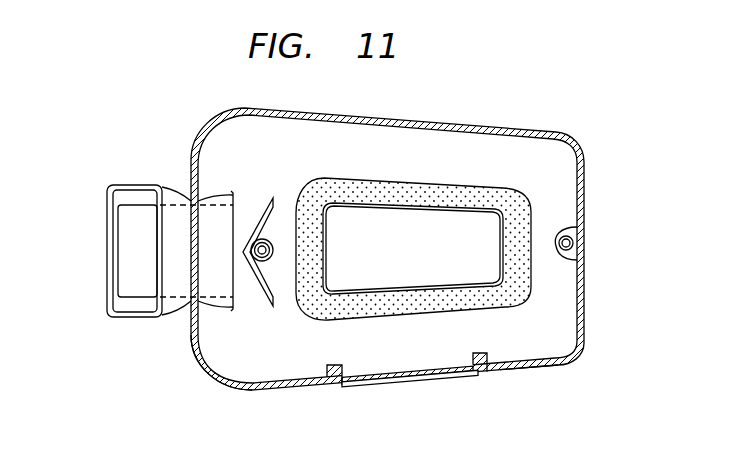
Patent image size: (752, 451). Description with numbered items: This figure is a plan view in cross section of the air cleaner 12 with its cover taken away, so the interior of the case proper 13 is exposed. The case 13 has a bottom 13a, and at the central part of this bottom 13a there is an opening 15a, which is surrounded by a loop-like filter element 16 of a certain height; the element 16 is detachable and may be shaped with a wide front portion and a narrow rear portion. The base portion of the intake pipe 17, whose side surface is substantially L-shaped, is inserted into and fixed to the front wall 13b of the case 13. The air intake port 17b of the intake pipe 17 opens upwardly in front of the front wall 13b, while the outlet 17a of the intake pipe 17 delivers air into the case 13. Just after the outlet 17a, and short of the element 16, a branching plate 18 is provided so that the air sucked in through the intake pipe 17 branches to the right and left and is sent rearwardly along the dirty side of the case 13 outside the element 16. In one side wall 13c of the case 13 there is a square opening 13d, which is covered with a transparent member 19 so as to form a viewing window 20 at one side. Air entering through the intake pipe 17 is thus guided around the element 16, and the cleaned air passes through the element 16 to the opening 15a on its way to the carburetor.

The air cleaner 12 is at (489, 113).
The case proper 13 is at (433, 113).
The bottom 13a is at (552, 213).
The front wall 13b is at (207, 357).
The side wall 13c is at (528, 367).
The square opening 13d is at (348, 384).
The opening 15a is at (447, 228).
The filter element 16 is at (360, 190).
The intake pipe 17 is at (102, 282).
The outlet 17a is at (237, 272).
The air intake port 17b is at (141, 273).
The branching plate 18 is at (262, 207).
The transparent member 19 is at (387, 368).
The viewing window 20 is at (451, 381).